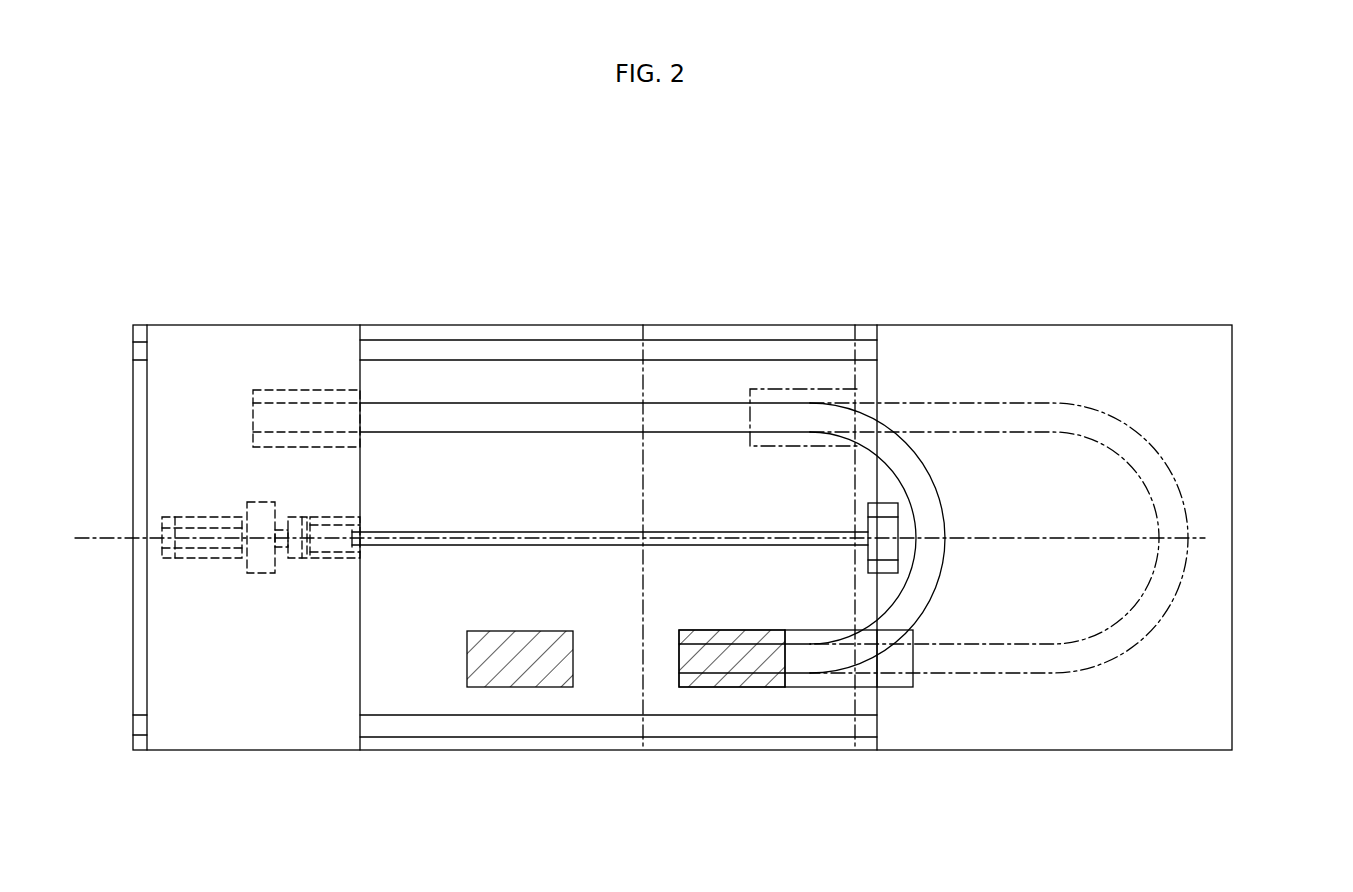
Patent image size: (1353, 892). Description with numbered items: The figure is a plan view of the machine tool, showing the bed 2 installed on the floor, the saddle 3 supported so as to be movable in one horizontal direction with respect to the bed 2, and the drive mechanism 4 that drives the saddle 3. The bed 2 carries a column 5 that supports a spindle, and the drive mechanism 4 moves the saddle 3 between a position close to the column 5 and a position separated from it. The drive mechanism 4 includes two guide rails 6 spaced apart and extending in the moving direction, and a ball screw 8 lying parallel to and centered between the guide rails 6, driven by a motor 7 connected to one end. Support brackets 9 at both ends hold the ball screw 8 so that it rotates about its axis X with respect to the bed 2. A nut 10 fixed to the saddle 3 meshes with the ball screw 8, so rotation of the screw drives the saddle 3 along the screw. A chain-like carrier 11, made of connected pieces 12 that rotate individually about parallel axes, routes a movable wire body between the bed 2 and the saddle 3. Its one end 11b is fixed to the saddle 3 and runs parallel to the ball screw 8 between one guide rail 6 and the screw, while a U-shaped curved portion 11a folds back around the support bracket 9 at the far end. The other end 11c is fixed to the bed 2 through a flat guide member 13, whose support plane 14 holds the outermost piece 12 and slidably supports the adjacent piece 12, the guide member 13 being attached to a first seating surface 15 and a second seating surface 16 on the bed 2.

The bed 2 is at (1244, 503).
The saddle 3 is at (213, 312).
The drive mechanism 4 is at (428, 642).
The column 5 is at (877, 385).
The guide rail 6 is at (512, 340).
The motor 7 is at (197, 560).
The ball screw 8 is at (487, 532).
The support bracket 9 is at (255, 575).
The nut 10 is at (318, 560).
The carrier 11 is at (948, 488).
The curved portion 11a is at (940, 517).
The one end 11b is at (302, 403).
The other end 11c is at (722, 673).
The piece 12 is at (572, 403).
The guide member 13 is at (796, 702).
The support plane 14 is at (845, 680).
The first seating surface 15 is at (678, 676).
The second seating surface 16 is at (467, 668).
The axis X is at (563, 538).